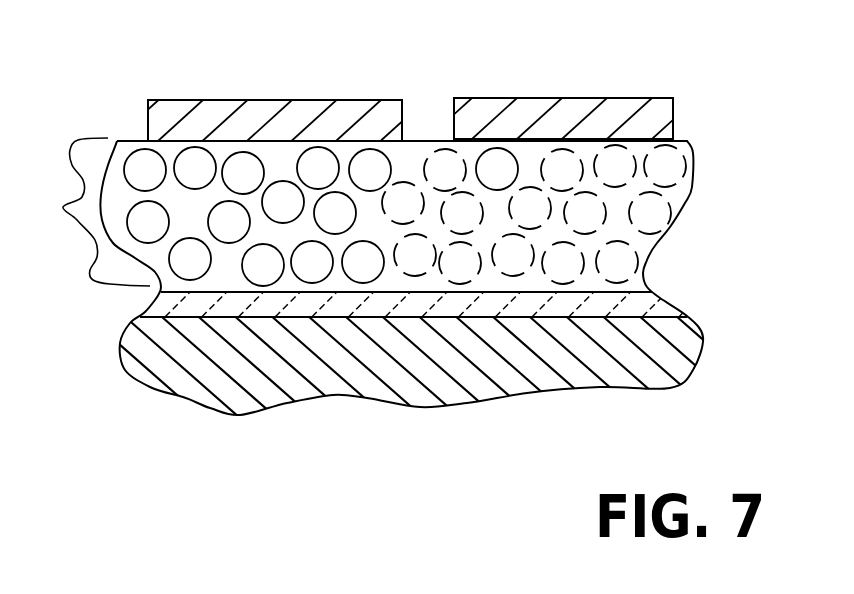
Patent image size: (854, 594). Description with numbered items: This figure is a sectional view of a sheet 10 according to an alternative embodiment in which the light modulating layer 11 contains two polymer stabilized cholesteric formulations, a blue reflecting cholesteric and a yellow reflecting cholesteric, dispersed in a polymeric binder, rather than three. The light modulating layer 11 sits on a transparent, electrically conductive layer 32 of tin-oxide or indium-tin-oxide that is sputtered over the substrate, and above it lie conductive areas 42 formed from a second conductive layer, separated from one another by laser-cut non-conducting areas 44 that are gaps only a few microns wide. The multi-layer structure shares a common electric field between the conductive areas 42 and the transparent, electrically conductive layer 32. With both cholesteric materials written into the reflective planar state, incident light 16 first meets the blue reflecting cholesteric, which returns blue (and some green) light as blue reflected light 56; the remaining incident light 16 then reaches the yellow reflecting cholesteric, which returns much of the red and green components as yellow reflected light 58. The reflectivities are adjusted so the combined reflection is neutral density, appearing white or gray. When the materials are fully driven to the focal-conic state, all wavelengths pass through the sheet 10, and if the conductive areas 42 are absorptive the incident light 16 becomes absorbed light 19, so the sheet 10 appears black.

The sheet 10 is at (694, 52).
The light modulating layer 11 is at (85, 212).
The incident light 16 is at (241, 198).
The absorbed light 19 is at (498, 158).
The transparent, electrically conductive layer 32 is at (150, 308).
The conductive areas 42 is at (205, 112).
The non-conducting areas 44 is at (428, 108).
The blue reflected light 56 is at (233, 226).
The yellow reflected light 58 is at (242, 198).